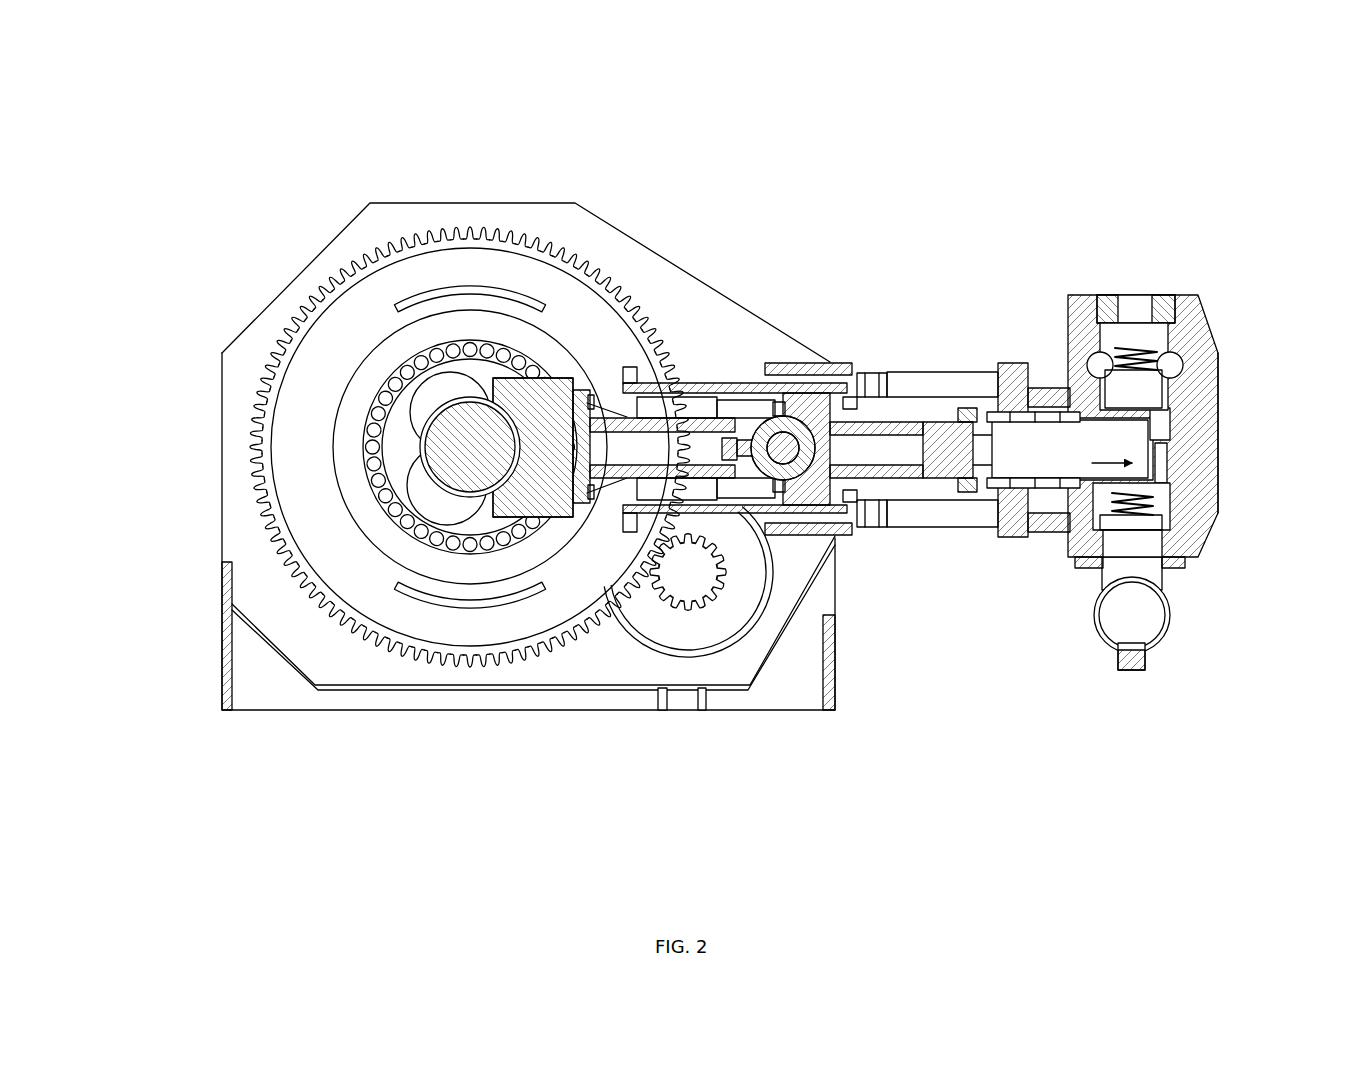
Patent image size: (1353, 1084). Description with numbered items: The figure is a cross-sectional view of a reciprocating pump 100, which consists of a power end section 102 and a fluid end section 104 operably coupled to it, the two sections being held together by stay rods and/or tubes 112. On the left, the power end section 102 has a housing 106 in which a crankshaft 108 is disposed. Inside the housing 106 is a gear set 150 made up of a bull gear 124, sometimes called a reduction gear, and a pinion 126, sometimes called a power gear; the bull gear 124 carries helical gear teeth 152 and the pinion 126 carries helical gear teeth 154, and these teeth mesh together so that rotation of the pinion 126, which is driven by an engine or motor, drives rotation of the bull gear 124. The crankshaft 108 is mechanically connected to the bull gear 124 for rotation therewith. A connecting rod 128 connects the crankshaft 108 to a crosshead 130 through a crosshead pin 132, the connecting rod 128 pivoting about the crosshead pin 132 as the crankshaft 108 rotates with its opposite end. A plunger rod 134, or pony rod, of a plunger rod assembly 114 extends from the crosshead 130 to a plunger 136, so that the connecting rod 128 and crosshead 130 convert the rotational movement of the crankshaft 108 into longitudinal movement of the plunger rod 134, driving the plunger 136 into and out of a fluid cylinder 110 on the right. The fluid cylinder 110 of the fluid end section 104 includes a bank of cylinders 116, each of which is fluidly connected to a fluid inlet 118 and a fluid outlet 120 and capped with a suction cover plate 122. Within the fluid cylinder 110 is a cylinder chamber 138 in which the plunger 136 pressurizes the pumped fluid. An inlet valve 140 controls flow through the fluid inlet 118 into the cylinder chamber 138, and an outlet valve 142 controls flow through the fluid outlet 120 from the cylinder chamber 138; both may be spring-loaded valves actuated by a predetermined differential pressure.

The reciprocating pump 100 is at (1197, 108).
The power end section 102 is at (328, 200).
The fluid end section 104 is at (1190, 283).
The housing 106 is at (222, 530).
The crankshaft 108 is at (470, 375).
The fluid cylinder 110 is at (1085, 296).
The stay rods and/or tubes 112 is at (920, 372).
The plunger rod assembly 114 is at (930, 488).
The cylinder 116 is at (1217, 337).
The fluid inlet 118 is at (1168, 617).
The fluid outlet 120 is at (1158, 358).
The suction cover plate 122 is at (1220, 470).
The bull gear 124 is at (298, 440).
The pinion 126 is at (688, 585).
The connecting rod 128 is at (648, 410).
The crosshead 130 is at (832, 410).
The crosshead pin 132 is at (792, 435).
The plunger rod 134 is at (915, 492).
The plunger 136 is at (1063, 462).
The cylinder chamber 138 is at (1108, 418).
The inlet valve 140 is at (1132, 533).
The outlet valve 142 is at (1152, 381).
The gear set 150 is at (598, 655).
The helical gear teeth 152 is at (498, 232).
The helical gear teeth 154 is at (705, 612).